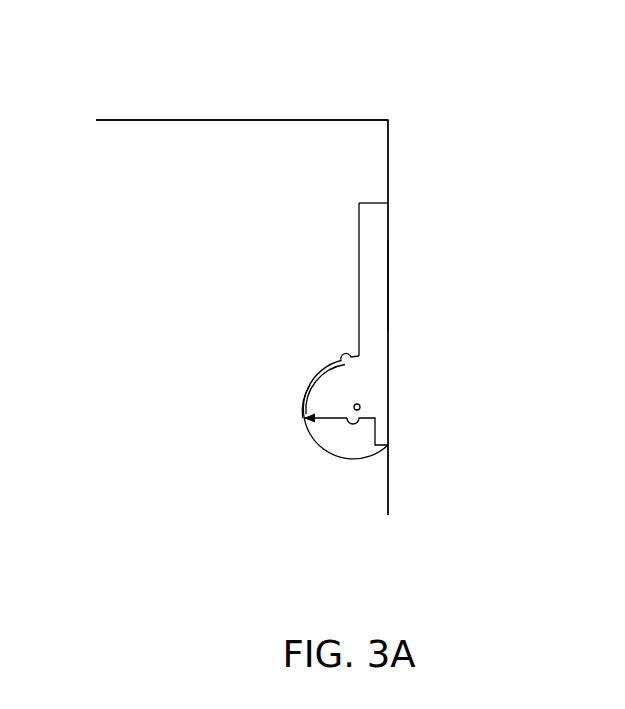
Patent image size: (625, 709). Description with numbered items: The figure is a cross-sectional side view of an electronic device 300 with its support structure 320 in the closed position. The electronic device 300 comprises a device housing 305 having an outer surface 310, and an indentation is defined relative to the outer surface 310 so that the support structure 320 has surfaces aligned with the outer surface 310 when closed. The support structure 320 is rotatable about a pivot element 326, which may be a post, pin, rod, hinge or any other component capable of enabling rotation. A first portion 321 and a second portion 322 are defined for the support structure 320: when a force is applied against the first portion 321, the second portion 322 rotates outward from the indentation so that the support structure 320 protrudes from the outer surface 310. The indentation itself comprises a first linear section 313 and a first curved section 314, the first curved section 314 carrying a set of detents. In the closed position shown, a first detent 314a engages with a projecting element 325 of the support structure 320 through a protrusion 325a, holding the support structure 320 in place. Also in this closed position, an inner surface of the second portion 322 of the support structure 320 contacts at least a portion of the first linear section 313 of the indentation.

The electronic device 300 is at (242, 269).
The device housing 305 is at (247, 120).
The outer surface 310 is at (390, 163).
The first linear section 313 is at (357, 295).
The first curved section 314 is at (348, 459).
The first detent 314a is at (303, 415).
The support structure 320 is at (372, 196).
The first portion 321 is at (388, 427).
The second portion 322 is at (388, 283).
The projecting element 325 is at (345, 383).
The protrusion 325a is at (308, 423).
The pivot element 326 is at (368, 405).